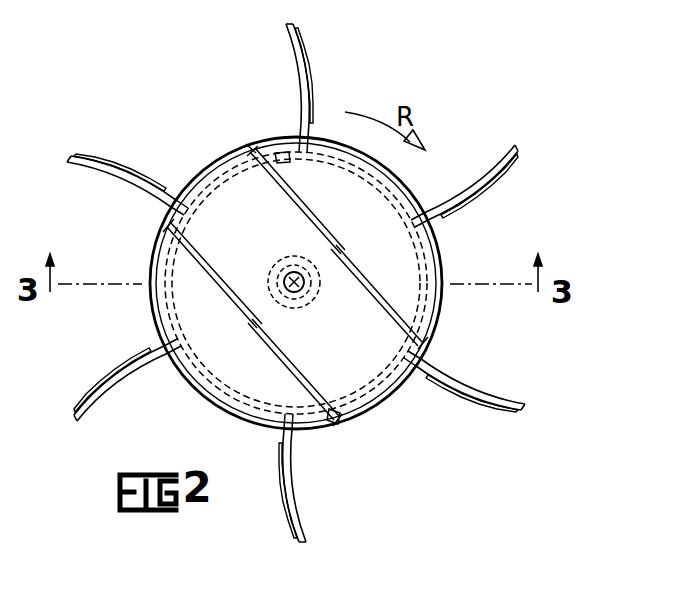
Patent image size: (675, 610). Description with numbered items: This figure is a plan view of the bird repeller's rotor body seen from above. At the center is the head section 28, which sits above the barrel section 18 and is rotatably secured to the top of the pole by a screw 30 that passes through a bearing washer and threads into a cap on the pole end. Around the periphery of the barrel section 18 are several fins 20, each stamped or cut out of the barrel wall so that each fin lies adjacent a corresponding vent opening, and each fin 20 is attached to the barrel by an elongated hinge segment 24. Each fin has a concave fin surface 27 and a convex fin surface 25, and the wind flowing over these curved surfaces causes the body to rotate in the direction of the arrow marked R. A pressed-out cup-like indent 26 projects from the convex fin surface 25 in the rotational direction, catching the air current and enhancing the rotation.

The barrel section 18 is at (441, 255).
The fin 20 is at (284, 27).
The elongated hinge segment 24 is at (290, 158).
The convex fin surface 25 is at (296, 34).
The cup-like portion or indent 26 is at (320, 63).
The concave fin surface 27 is at (300, 82).
The head section 28 is at (222, 172).
The screw 30 is at (302, 284).